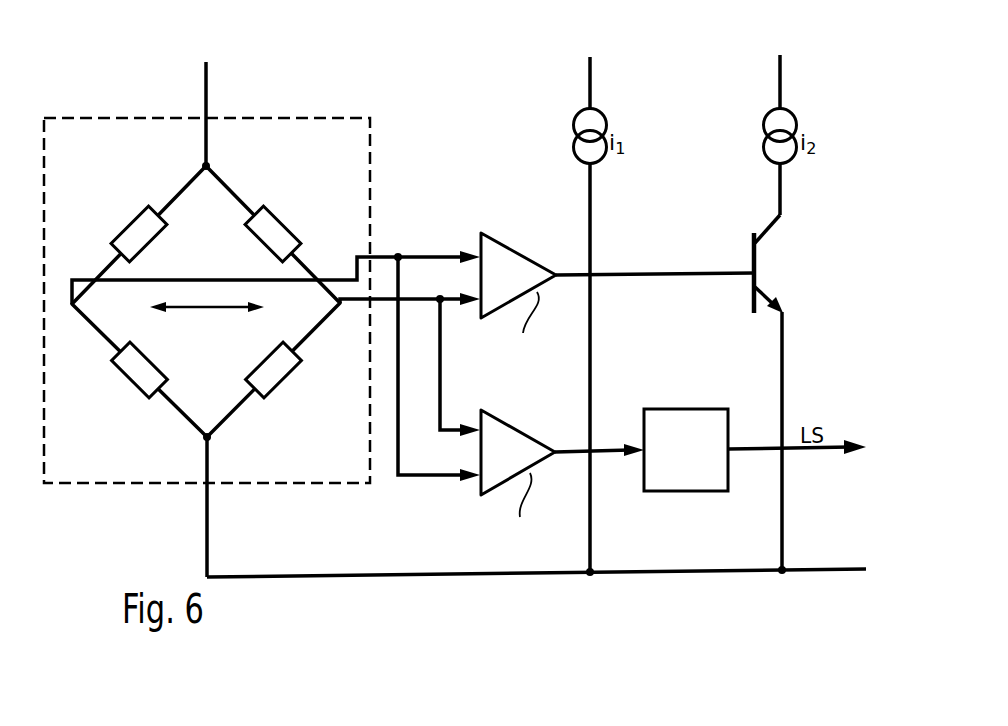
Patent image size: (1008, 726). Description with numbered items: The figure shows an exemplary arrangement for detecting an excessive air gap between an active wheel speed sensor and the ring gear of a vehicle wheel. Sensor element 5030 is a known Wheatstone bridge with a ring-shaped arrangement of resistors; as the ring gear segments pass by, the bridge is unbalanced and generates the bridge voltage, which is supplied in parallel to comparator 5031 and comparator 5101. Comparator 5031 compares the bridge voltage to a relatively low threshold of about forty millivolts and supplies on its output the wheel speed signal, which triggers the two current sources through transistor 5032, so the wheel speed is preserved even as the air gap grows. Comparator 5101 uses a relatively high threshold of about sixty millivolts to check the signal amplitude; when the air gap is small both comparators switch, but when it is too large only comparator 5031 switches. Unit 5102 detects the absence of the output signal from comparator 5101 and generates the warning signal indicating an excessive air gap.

The sensor element 5030 is at (373, 147).
The comparator 5031 is at (532, 267).
The transistor 5032 is at (752, 245).
The comparator 5101 is at (532, 440).
The unit 5102 is at (690, 418).